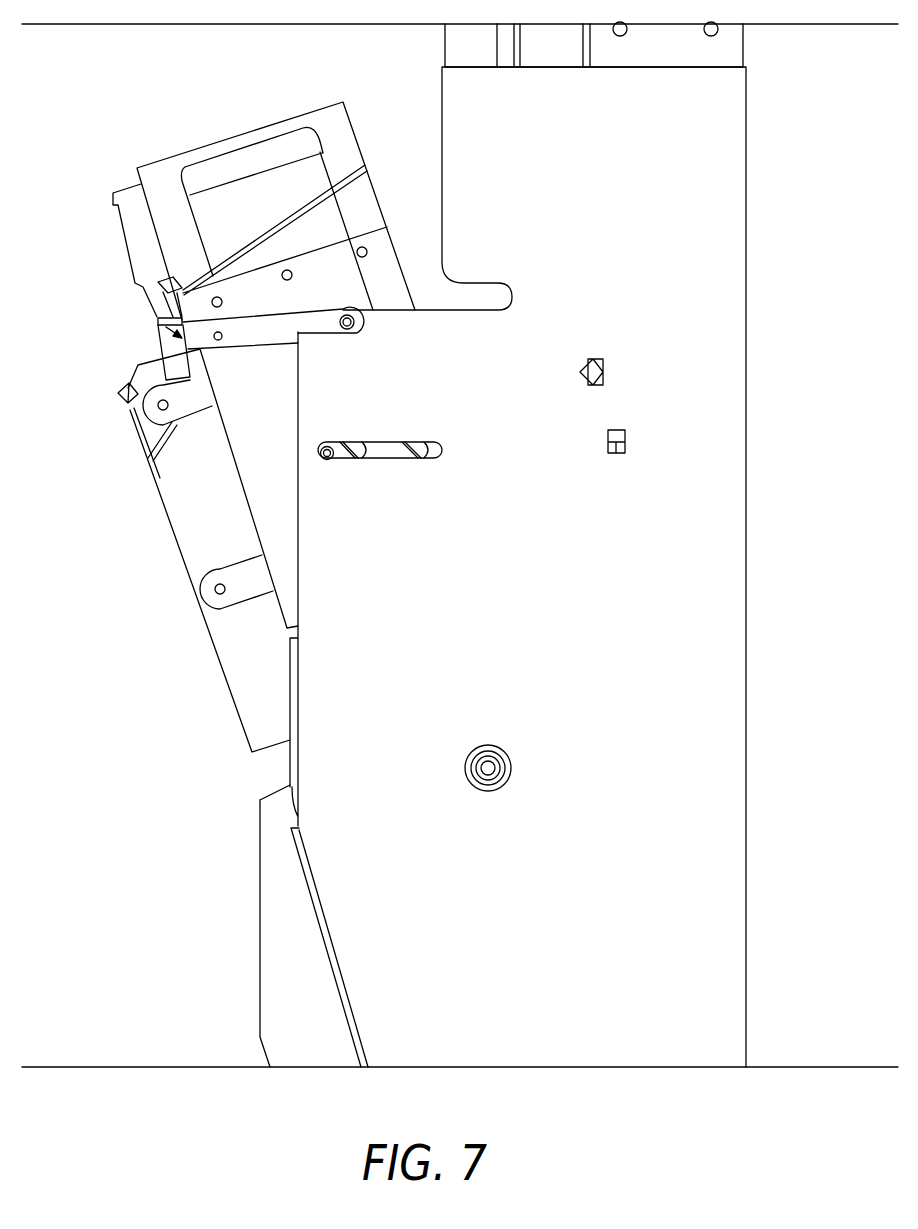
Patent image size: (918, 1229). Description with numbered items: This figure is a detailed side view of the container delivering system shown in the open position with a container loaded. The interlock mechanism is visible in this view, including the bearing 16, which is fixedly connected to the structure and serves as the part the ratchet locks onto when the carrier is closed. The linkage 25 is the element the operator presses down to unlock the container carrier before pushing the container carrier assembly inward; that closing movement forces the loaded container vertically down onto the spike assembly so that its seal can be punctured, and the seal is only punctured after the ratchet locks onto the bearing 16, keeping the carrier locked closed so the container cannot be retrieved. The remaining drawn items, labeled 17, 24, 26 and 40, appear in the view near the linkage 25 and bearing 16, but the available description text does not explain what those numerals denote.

The bearing 16 is at (323, 462).
The link bar 17 is at (388, 459).
The pivot arm 24 is at (356, 320).
The linkage 25 is at (158, 322).
The pivot bolt 26 is at (340, 333).
The fastener 40 is at (213, 338).